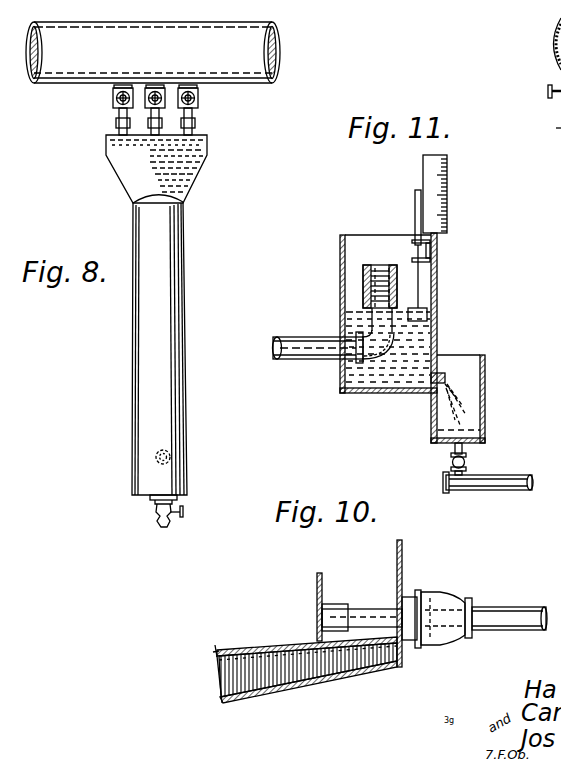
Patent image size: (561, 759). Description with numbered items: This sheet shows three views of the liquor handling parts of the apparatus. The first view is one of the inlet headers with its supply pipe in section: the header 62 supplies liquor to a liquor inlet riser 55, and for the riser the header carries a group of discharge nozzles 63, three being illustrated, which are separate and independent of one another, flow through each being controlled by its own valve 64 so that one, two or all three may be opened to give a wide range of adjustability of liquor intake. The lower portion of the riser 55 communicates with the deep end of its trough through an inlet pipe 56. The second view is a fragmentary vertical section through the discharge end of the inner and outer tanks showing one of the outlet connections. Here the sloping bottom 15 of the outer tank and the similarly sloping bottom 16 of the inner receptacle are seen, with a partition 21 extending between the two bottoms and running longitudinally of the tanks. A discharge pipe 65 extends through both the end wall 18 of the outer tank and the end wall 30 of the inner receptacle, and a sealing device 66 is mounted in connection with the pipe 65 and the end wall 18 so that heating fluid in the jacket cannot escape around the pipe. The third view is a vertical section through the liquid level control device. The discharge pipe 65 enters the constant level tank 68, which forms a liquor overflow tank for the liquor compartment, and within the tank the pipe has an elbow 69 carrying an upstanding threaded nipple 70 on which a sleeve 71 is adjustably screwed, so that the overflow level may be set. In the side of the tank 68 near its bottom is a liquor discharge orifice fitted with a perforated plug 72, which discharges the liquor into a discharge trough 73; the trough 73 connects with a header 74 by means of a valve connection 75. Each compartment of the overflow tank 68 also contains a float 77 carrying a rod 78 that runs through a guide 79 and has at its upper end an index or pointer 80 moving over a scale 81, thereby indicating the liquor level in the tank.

In FIG. 8, the header 62 is at (262, 44).
In FIG. 8, the discharge nozzle 63 is at (184, 110).
In FIG. 8, the valve 64 is at (198, 97).
In FIG. 8, the liquor inlet riser 55 is at (177, 317).
In FIG. 8, the inlet pipe 56 is at (155, 455).
In FIG. 11, the constant level tank 68 is at (340, 258).
In FIG. 11, the sleeve 71 is at (362, 287).
In FIG. 11, the threaded nipple 70 is at (345, 321).
In FIG. 11, the elbow 69 is at (372, 358).
In FIG. 11, the discharge pipe 65 is at (310, 352).
In FIG. 10, the discharge pipe 65 is at (526, 622).
In FIG. 11, the float 77 is at (428, 307).
In FIG. 11, the rod 78 is at (420, 275).
In FIG. 11, the guide 79 is at (412, 242).
In FIG. 11, the index or pointer 80 is at (419, 198).
In FIG. 11, the scale 81 is at (433, 158).
In FIG. 11, the perforated plug 72 is at (445, 375).
In FIG. 11, the discharge trough 73 is at (486, 380).
In FIG. 11, the valve connection 75 is at (466, 462).
In FIG. 11, the header 74 is at (508, 487).
In FIG. 10, the sloping bottom of outer tank 15 is at (305, 677).
In FIG. 10, the sloping bottom of inner tank 16 is at (235, 652).
In FIG. 10, the partition 21 is at (362, 660).
In FIG. 10, the end wall of inner receptacle 30 is at (317, 578).
In FIG. 10, the end wall of outer tank 18 is at (403, 560).
In FIG. 10, the sealing device 66 is at (443, 645).